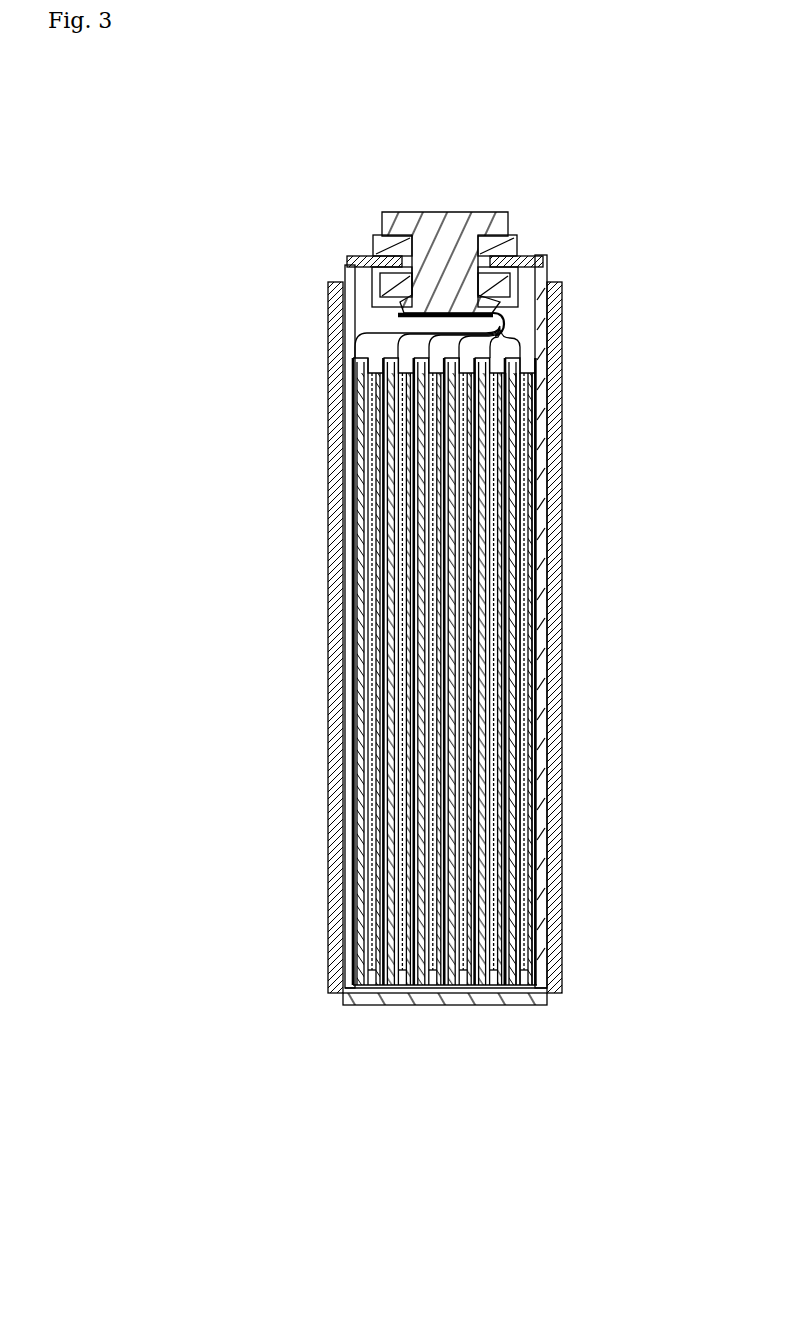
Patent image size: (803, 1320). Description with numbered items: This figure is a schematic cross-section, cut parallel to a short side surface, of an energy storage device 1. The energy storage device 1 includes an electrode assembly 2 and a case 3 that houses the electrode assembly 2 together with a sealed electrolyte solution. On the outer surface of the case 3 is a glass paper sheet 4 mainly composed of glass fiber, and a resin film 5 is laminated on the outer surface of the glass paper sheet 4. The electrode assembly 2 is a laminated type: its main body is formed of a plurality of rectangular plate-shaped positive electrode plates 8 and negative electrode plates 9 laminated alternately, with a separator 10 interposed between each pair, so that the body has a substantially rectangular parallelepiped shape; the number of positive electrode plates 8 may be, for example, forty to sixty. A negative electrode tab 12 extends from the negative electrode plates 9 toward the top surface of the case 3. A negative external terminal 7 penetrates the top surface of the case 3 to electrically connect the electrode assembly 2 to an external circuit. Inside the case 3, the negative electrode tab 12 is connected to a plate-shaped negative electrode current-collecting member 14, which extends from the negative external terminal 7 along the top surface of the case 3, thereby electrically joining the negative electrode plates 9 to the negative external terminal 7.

The energy storage device 1 is at (590, 170).
The electrode assembly 2 is at (460, 984).
The case 3 is at (530, 254).
The glass paper sheet 4 is at (553, 262).
The resin film 5 is at (558, 282).
The negative external terminal 7 is at (437, 212).
The positive electrode plate 8 is at (505, 990).
The negative electrode plate 9 is at (521, 990).
The separator 10 is at (516, 990).
The negative electrode tab 12 is at (500, 330).
The negative electrode current-collecting member 14 is at (505, 312).